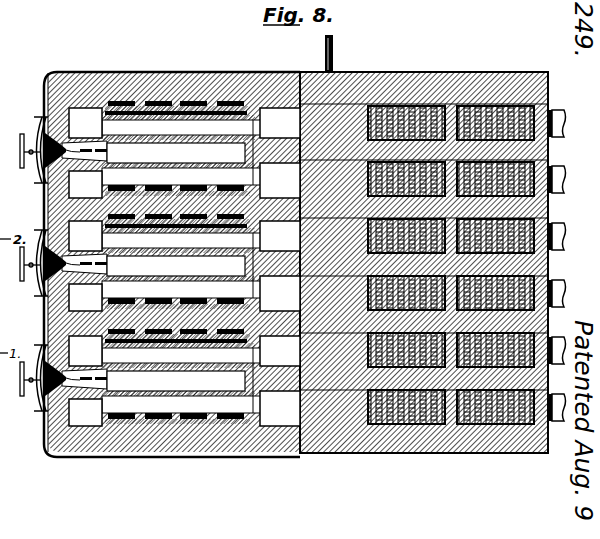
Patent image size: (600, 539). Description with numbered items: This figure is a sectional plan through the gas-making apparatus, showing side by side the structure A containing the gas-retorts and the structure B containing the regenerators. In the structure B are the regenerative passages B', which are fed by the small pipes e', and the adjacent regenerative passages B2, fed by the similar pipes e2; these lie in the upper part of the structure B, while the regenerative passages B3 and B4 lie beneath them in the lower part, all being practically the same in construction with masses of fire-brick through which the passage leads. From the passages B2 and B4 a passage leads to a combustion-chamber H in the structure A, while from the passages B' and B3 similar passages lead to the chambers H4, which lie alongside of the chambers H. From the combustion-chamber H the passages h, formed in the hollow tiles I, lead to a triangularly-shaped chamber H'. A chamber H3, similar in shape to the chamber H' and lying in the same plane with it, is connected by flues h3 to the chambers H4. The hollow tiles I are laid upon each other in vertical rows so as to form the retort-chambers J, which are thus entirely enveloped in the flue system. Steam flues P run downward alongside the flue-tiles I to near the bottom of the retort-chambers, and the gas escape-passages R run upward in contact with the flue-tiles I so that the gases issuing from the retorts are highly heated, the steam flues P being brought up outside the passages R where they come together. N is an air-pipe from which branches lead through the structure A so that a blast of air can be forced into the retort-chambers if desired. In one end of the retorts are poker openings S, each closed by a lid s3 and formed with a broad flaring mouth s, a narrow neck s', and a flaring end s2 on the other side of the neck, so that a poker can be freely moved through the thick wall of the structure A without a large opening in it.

The structure containing the gas-retorts A is at (176, 73).
The structure containing the regenerators B is at (446, 251).
The regenerative passage B' is at (474, 171).
The regenerative passage B2 is at (548, 102).
The regenerative passage B3 is at (20, 152).
The regenerative passage B4 is at (36, 118).
The air-pipe N is at (333, 52).
The combustion-chamber H is at (280, 237).
The triangularly-shaped chamber H' is at (85, 237).
The chamber H3 is at (85, 298).
The chamber H4 is at (280, 294).
The passage h is at (182, 242).
The flue h3 is at (182, 266).
The hollow tile I is at (130, 247).
The retort-chamber J is at (176, 267).
The flue P is at (218, 101).
The passage R is at (197, 120).
The opening S is at (30, 168).
The broad flaring mouth s is at (67, 271).
The narrow neck s' is at (86, 260).
The flaring end s2 is at (101, 260).
The lid s3 is at (35, 258).
The pipe e' is at (557, 265).
The pipe e2 is at (558, 236).